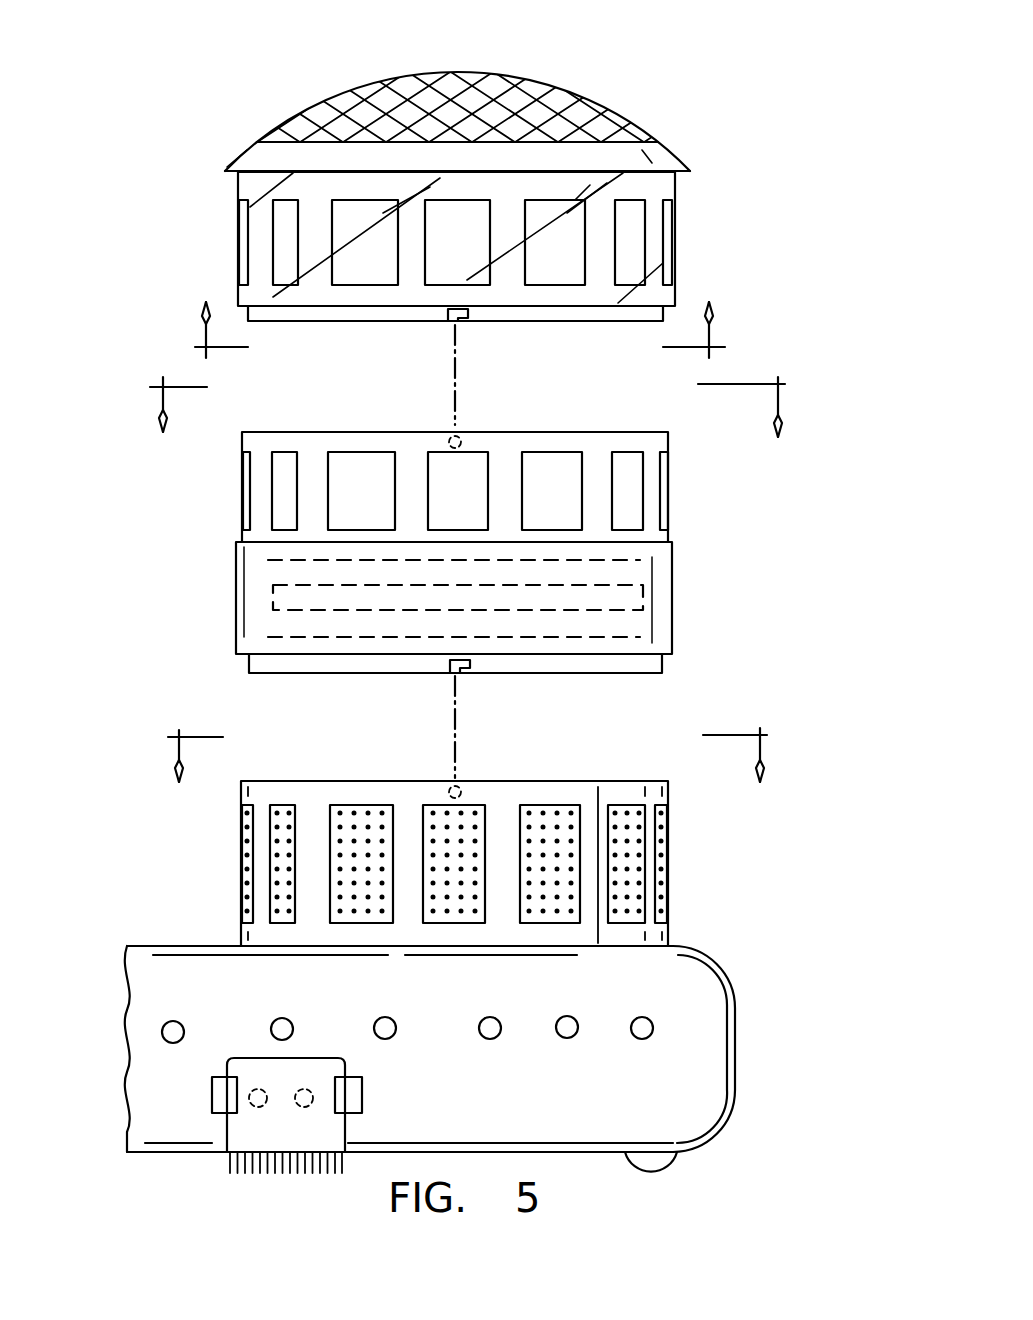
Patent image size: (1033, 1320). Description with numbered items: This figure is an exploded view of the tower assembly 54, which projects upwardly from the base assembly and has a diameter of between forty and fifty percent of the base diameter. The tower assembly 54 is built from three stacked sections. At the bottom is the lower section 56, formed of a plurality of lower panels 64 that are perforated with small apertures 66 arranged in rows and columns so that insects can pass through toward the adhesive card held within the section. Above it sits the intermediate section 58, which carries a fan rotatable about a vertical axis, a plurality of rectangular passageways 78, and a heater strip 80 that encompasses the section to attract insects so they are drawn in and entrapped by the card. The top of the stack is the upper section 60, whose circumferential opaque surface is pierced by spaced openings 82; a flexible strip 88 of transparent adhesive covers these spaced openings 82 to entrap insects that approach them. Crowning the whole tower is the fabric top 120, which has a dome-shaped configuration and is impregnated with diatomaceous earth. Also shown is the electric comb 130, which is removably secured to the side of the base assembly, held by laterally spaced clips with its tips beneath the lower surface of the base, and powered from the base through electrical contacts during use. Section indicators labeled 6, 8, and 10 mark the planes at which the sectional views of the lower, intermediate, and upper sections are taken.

The fabric top 120 is at (300, 108).
The upper section 60 is at (693, 165).
The flexible strip 88 is at (258, 238).
The spaced openings 82 is at (568, 230).
The section line 10 is at (456, 306).
The section line 8 is at (470, 392).
The rectangular passageways 78 is at (560, 468).
The tower assembly 54 is at (435, 552).
The intermediate section 58 is at (668, 540).
The heater strip 80 is at (613, 610).
The section line 6 is at (468, 740).
The small apertures 66 is at (353, 823).
The lower panels 64 is at (623, 805).
The lower section 56 is at (529, 828).
The electric comb 130 is at (263, 1127).